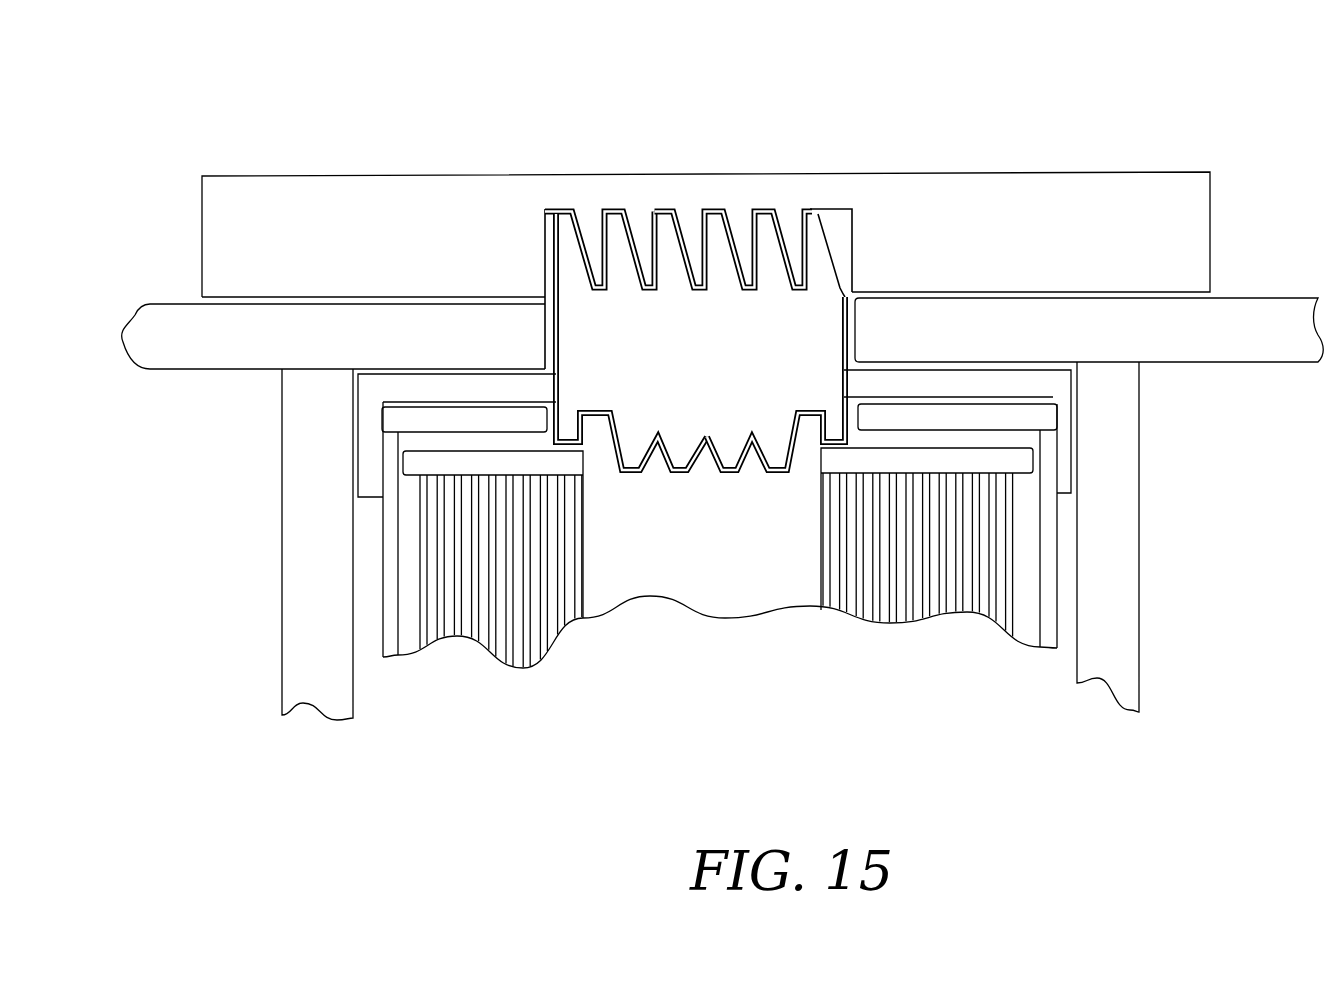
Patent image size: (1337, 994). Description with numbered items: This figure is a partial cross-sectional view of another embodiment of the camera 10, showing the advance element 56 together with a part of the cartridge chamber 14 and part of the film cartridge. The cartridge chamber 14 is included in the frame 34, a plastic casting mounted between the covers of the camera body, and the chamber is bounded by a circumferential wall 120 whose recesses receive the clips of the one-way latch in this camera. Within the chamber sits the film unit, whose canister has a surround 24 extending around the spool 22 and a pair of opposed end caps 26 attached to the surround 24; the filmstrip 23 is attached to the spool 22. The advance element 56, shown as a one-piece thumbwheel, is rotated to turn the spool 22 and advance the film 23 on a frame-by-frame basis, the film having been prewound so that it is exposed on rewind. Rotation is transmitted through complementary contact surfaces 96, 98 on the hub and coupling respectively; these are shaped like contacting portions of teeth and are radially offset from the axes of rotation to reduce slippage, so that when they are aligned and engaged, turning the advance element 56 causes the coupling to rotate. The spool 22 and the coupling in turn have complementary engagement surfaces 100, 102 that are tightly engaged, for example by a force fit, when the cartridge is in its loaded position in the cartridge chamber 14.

The camera 10 is at (723, 383).
The cartridge chamber 14 is at (313, 583).
The spool 22 is at (780, 615).
The filmstrip 23 is at (515, 657).
The surround 24 is at (383, 657).
The end caps 26 is at (965, 412).
The frame 34 is at (1072, 300).
The advance element 56 is at (383, 223).
The contact surface 96 is at (732, 248).
The contact surface 98 is at (632, 248).
The engagement surface 100 is at (617, 447).
The engagement surface 102 is at (717, 467).
The circumferential wall 120 is at (1078, 583).